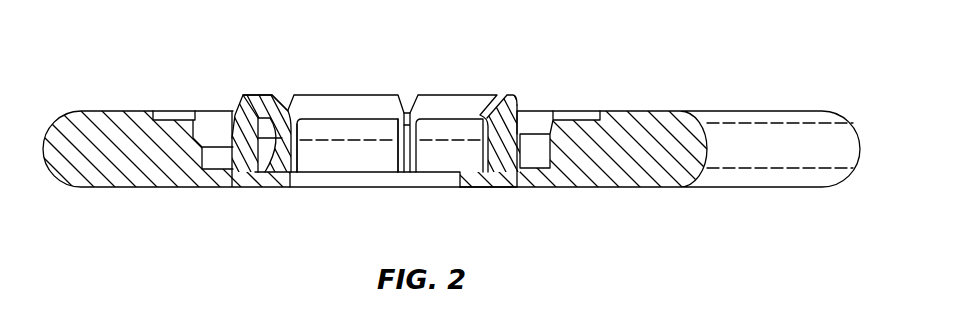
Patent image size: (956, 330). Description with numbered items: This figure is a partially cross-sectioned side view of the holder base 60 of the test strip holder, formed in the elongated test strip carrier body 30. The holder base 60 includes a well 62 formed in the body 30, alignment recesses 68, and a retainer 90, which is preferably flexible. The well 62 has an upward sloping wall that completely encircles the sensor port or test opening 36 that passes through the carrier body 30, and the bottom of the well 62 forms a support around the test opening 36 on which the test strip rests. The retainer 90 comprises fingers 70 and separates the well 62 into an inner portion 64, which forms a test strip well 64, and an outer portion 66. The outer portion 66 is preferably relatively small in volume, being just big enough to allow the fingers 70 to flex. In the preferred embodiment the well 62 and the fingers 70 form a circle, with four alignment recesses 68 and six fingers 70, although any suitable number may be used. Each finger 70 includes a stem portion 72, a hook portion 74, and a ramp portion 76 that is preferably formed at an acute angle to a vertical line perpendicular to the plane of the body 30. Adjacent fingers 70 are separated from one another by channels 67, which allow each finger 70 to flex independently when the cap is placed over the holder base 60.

The carrier body 30 is at (78, 121).
The test opening 36 is at (386, 178).
The holder base 60 is at (512, 32).
The well 62 is at (548, 150).
The inner portion 64 is at (333, 150).
The outer portion 66 is at (535, 110).
The channels 67 is at (413, 110).
The alignment recesses 68 is at (595, 110).
The fingers 70 is at (242, 105).
The stem portion 72 is at (230, 150).
The hook portion 74 is at (262, 172).
The ramp portion 76 is at (265, 103).
The retainer 90 is at (347, 102).